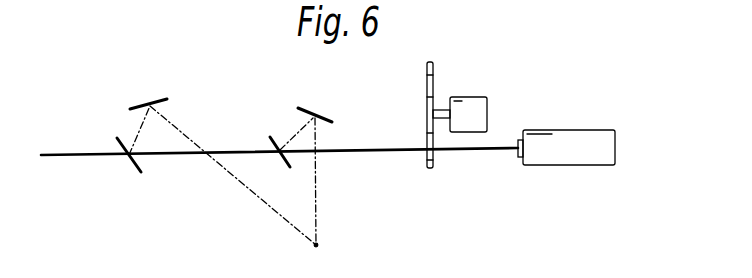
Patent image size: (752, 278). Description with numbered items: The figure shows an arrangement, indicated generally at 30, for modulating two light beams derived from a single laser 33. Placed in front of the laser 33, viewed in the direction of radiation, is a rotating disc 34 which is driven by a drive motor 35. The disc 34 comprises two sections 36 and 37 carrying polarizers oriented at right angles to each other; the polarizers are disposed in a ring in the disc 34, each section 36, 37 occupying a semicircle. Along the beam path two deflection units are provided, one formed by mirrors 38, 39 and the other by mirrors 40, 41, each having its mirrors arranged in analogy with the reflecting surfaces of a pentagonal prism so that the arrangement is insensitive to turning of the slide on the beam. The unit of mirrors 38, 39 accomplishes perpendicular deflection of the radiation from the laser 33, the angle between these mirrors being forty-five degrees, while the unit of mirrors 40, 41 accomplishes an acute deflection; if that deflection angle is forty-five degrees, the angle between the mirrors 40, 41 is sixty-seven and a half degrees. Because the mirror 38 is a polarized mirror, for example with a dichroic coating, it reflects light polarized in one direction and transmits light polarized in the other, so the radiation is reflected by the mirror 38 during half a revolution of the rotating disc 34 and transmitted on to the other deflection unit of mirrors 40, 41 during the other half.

The optical measuring arrangement 30 is at (474, 3).
The laser 33 is at (568, 140).
The rotating disc 34 is at (426, 122).
The drive motor 35 is at (480, 107).
The section 36 is at (434, 158).
The section 37 is at (434, 80).
The mirror 38 is at (283, 160).
The mirror 39 is at (318, 116).
The mirror 40 is at (132, 168).
The mirror 41 is at (157, 100).